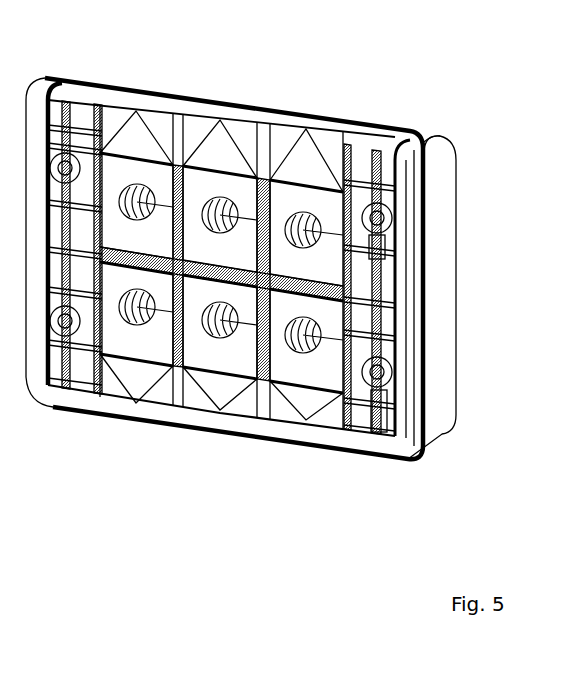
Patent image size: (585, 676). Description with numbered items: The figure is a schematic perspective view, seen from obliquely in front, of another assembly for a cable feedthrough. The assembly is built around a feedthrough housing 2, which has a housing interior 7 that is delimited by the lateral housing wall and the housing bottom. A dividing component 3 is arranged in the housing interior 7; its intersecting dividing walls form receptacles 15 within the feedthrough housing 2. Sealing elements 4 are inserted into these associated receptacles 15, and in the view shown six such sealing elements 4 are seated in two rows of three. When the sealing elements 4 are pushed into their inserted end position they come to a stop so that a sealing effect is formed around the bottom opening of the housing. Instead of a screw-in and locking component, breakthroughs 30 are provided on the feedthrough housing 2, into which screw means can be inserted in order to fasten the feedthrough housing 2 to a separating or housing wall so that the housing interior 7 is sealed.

The feedthrough housing 2 is at (434, 181).
The dividing component 3 is at (272, 383).
The sealing elements 4 is at (337, 368).
The housing interior 7 is at (360, 168).
The receptacles 15 is at (126, 148).
The breakthroughs 30 is at (63, 330).